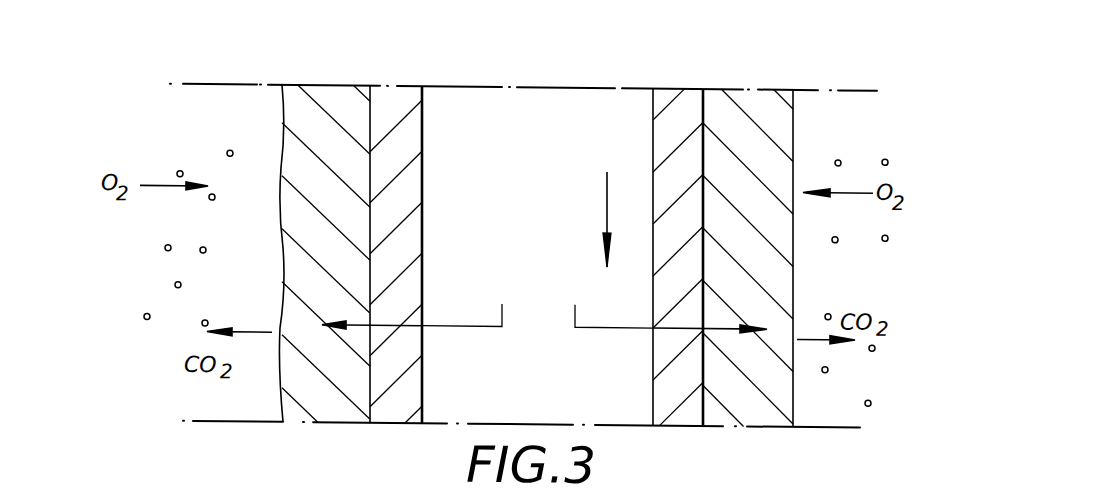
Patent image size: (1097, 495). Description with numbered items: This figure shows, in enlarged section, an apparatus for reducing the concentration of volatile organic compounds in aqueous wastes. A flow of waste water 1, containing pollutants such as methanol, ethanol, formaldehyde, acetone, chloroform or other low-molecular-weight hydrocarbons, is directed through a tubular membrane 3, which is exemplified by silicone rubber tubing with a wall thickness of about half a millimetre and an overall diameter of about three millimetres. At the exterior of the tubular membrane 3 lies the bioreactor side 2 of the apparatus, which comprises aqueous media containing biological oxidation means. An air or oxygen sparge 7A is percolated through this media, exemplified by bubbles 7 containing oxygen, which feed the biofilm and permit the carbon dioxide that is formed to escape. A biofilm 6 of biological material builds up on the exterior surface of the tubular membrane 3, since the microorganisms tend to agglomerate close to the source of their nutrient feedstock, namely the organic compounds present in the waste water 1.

The waste water 1 is at (522, 191).
The bioreactor side 2 is at (228, 240).
The tubular membrane 3 is at (667, 95).
The biofilm 6 is at (313, 98).
The bubbles 7 is at (165, 252).
The air or oxygen sparge 7A is at (137, 324).